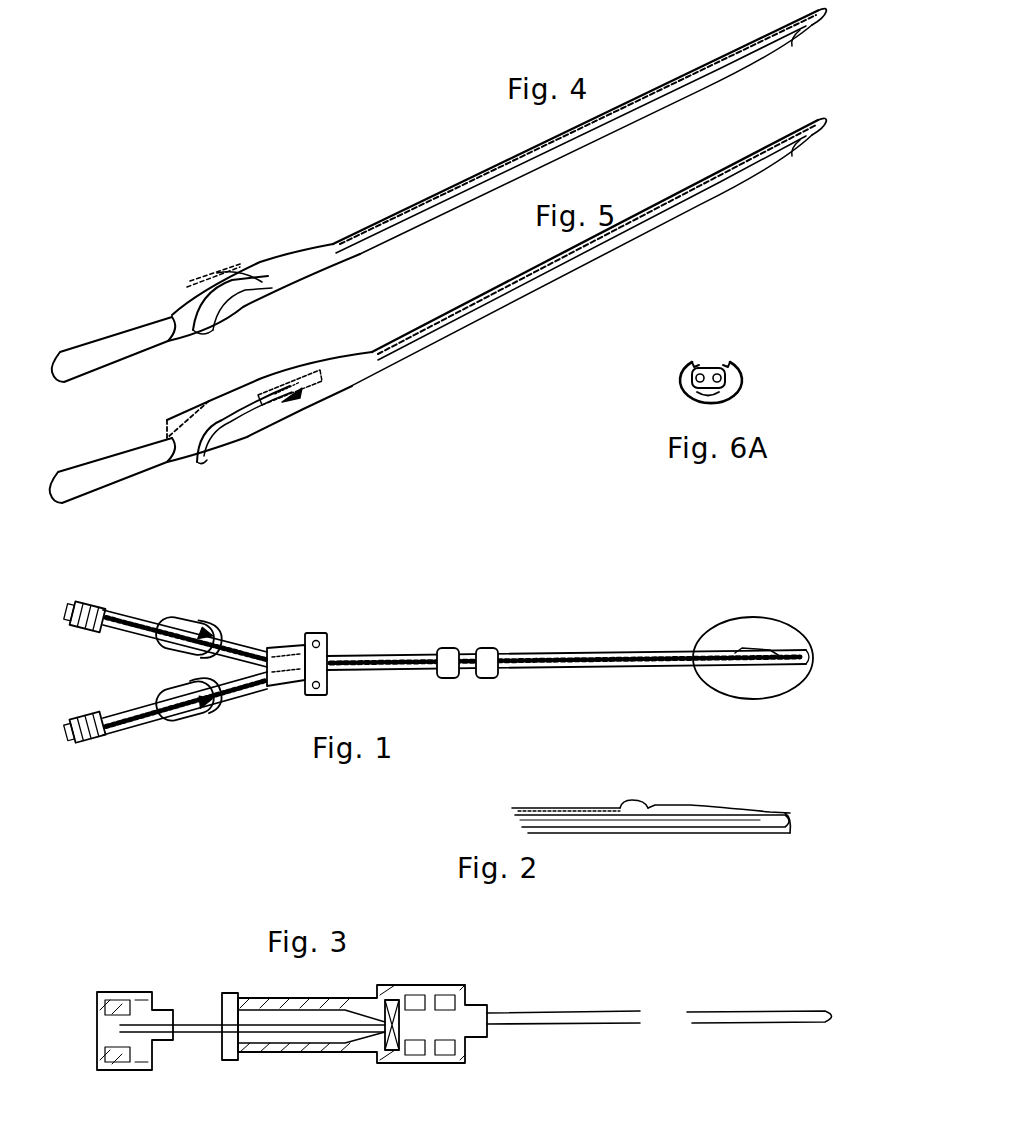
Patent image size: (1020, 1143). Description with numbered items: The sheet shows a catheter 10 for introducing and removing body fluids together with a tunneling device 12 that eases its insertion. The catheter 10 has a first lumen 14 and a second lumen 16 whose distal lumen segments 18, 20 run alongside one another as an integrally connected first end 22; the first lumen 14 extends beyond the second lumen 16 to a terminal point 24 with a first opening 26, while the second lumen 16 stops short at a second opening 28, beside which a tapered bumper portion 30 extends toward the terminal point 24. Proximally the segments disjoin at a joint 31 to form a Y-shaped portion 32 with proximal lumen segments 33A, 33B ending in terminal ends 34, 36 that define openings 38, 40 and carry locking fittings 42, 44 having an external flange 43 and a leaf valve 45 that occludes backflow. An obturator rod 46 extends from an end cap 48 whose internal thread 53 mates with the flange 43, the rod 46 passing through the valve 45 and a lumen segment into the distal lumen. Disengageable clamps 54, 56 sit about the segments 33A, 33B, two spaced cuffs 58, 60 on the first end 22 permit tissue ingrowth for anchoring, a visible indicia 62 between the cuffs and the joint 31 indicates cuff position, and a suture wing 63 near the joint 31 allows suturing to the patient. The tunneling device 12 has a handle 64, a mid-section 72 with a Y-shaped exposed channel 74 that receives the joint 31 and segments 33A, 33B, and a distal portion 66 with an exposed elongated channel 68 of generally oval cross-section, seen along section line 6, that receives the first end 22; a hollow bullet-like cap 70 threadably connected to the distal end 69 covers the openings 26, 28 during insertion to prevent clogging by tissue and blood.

In FIG. 1, the catheter 10 is at (455, 520).
In FIG. 4, the tunneling device 12 is at (390, 158).
In FIG. 5, the tunneling device 12 is at (520, 345).
In FIG. 6A, the first lumen 14 is at (692, 362).
In FIG. 1, the first lumen 14 is at (226, 699).
In FIG. 6A, the second lumen 16 is at (738, 380).
In FIG. 1, the second lumen 16 is at (230, 642).
In FIG. 1, the distal lumen segment 18 is at (558, 666).
In FIG. 1, the distal lumen segment 20 is at (545, 654).
In FIG. 5, the first end 22 is at (310, 375).
In FIG. 6A, the first end 22 is at (710, 368).
In FIG. 1, the first end 22 is at (694, 728).
In FIG. 2, the first end 22 is at (606, 858).
In FIG. 2, the terminal point 24 is at (775, 840).
In FIG. 2, the first opening 26 is at (790, 812).
In FIG. 2, the second opening 28 is at (628, 800).
In FIG. 2, the bumper portion 30 is at (690, 806).
In FIG. 5, the joint 31 is at (305, 399).
In FIG. 1, the joint 31 is at (278, 686).
In FIG. 1, the proximal Y-shaped portion 32 is at (290, 628).
In FIG. 5, the lumen segment 33A is at (200, 462).
In FIG. 1, the lumen segment 33A is at (132, 716).
In FIG. 5, the lumen segment 33B is at (170, 415).
In FIG. 1, the lumen segment 33B is at (140, 616).
In FIG. 1, the terminal end 34 is at (112, 610).
In FIG. 1, the terminal end 36 is at (110, 738).
In FIG. 1, the opening 38 is at (70, 604).
In FIG. 1, the opening 40 is at (76, 742).
In FIG. 1, the locking fitting 42 is at (96, 718).
In FIG. 3, the locking fitting 42 is at (410, 985).
In FIG. 3, the flange 43 is at (232, 1062).
In FIG. 1, the locking fitting 44 is at (97, 630).
In FIG. 3, the leaf valve 45 is at (390, 1000).
In FIG. 3, the obturator rod 46 is at (532, 995).
In FIG. 3, the end cap 48 is at (150, 992).
In FIG. 3, the internal thread 53 is at (160, 1070).
In FIG. 1, the disengageable clamp 54 is at (175, 617).
In FIG. 1, the disengageable clamp 56 is at (178, 716).
In FIG. 1, the cuff 58 is at (447, 648).
In FIG. 1, the cuff 60 is at (482, 648).
In FIG. 1, the visible indicia 62 is at (412, 670).
In FIG. 1, the suture wing 63 is at (328, 632).
In FIG. 4, the handle 64 is at (138, 335).
In FIG. 4, the distal portion 66 is at (455, 190).
In FIG. 5, the distal portion 66 is at (595, 237).
In FIG. 6A, the distal portion 66 is at (731, 362).
In FIG. 4, the exposed elongated channel 68 is at (365, 230).
In FIG. 5, the exposed elongated channel 68 is at (589, 251).
In FIG. 6A, the exposed elongated channel 68 is at (680, 380).
In FIG. 4, the distal end 69 is at (786, 44).
In FIG. 5, the distal end 69 is at (788, 158).
In FIG. 4, the hollow cap 70 is at (800, 16).
In FIG. 4, the mid-section 72 is at (210, 268).
In FIG. 4, the Y-shaped exposed channel 74 is at (263, 258).
In FIG. 5, the section line 6- 6 is at (450, 360).